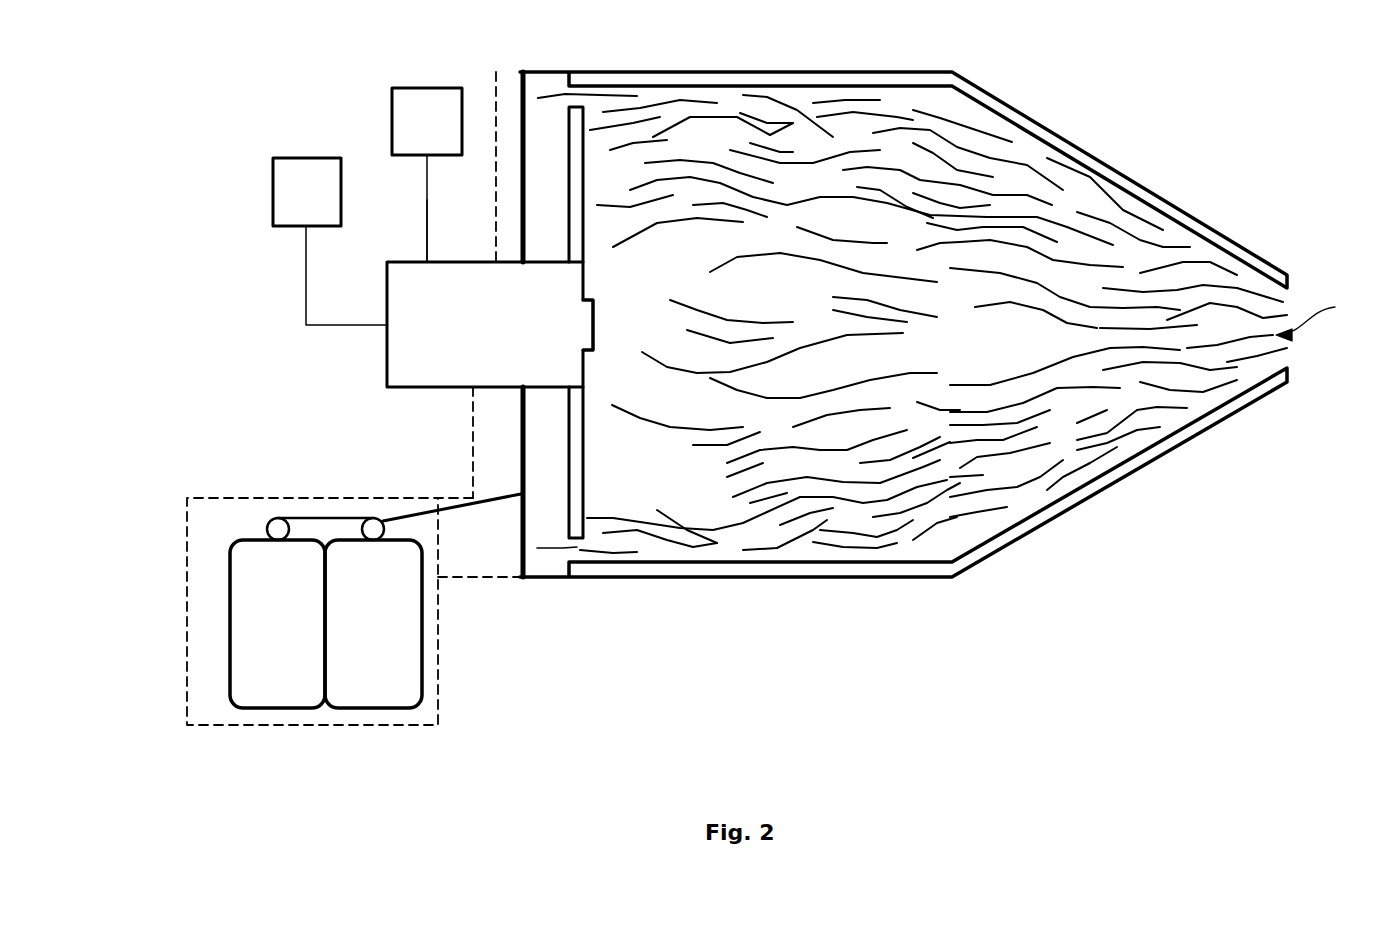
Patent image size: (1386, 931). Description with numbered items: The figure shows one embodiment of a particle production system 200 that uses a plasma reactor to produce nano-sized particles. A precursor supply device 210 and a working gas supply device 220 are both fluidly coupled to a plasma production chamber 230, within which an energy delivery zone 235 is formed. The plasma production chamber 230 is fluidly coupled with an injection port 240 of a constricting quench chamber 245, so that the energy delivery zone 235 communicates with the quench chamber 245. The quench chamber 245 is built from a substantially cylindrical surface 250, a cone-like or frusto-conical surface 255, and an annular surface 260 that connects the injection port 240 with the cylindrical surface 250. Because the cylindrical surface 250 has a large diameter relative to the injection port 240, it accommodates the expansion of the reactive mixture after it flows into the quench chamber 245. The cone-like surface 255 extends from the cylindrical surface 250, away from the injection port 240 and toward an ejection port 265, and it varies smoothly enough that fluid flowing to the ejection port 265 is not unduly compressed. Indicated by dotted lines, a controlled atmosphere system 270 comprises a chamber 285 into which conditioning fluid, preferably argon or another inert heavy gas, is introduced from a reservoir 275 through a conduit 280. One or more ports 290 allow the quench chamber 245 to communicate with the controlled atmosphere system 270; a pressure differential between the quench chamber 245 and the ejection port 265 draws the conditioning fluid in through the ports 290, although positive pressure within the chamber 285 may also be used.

The particle production system 200 is at (1243, 89).
The precursor supply device 210 is at (427, 88).
The working gas supply device 220 is at (306, 158).
The plasma production chamber 230 is at (463, 262).
The energy delivery zone 235 is at (502, 339).
The injection port 240 is at (595, 317).
The quench chamber 245 is at (998, 354).
The cylindrical surface 250 is at (828, 72).
The cone-like surface 255 is at (1072, 505).
The annular surface 260 is at (583, 465).
The ejection port 265 is at (1328, 318).
The controlled atmosphere system 270 is at (245, 483).
The reservoir 275 is at (293, 698).
The conduit 280 is at (447, 497).
The chamber 285 is at (568, 449).
The ports 290 is at (577, 545).